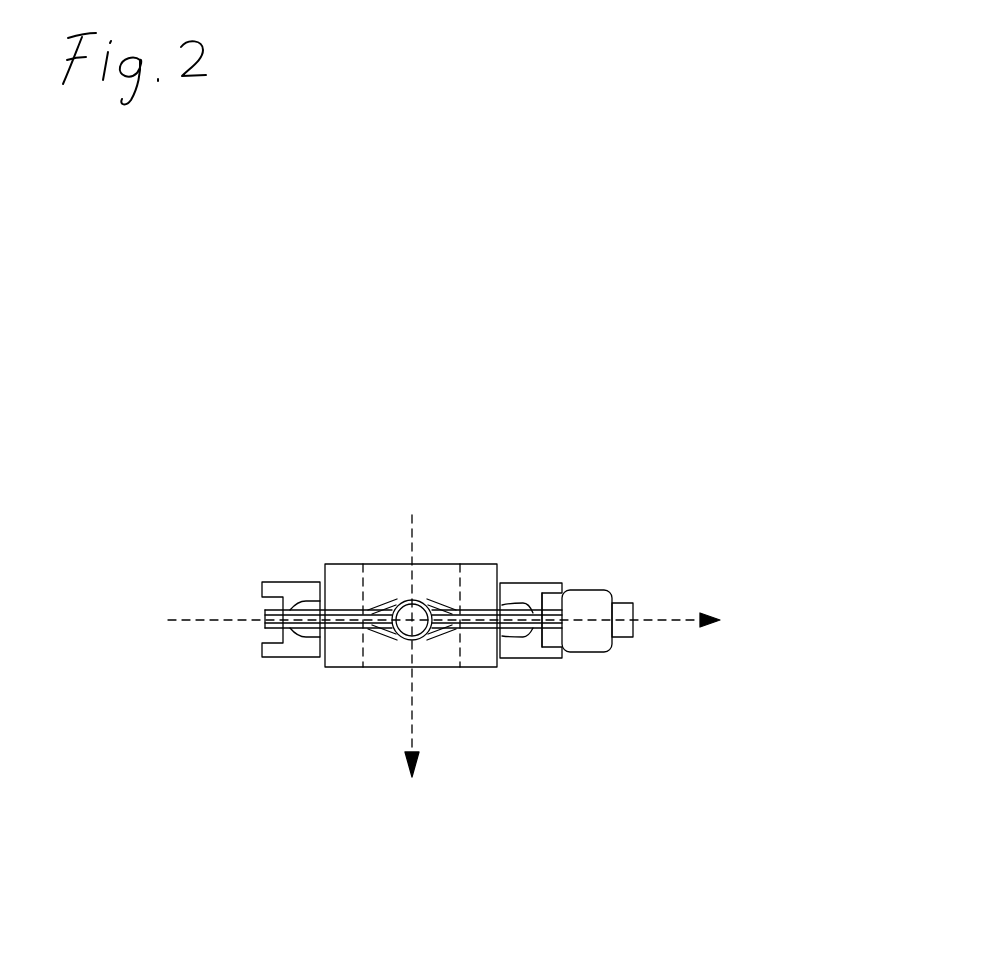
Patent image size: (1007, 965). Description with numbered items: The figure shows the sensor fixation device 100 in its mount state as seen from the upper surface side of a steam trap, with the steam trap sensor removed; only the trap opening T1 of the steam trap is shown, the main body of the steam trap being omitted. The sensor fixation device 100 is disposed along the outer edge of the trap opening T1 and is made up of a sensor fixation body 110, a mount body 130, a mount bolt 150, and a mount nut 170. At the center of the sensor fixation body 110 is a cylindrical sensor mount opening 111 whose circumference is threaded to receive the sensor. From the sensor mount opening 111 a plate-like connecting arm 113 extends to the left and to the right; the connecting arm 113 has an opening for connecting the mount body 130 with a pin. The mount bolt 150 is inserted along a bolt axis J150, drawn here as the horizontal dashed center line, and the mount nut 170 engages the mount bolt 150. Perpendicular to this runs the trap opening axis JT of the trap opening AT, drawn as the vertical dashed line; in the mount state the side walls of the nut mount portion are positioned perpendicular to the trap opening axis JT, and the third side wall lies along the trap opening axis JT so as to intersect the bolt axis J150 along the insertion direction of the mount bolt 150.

The sensor fixation device 100 is at (288, 520).
The sensor fixation body 110 is at (713, 432).
The sensor mount opening 111 is at (420, 600).
The connecting arm 113 is at (336, 612).
The mount body 130 is at (520, 650).
The mount bolt 150 is at (633, 630).
The mount nut 170 is at (583, 640).
The bolt axis J150 is at (215, 618).
The trap opening T1 is at (350, 658).
The trap opening AT is at (445, 670).
The trap opening axis JT is at (410, 728).